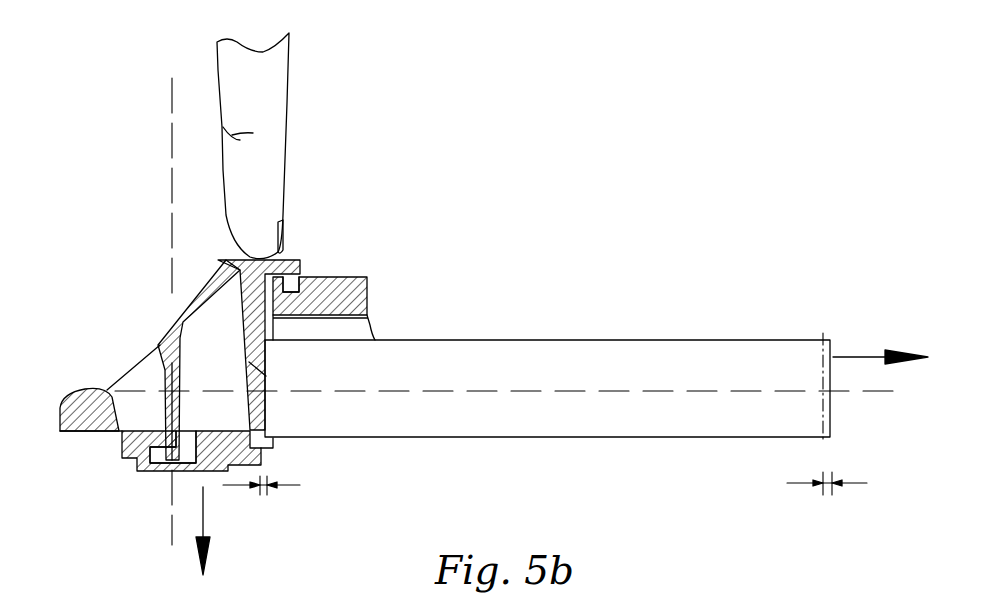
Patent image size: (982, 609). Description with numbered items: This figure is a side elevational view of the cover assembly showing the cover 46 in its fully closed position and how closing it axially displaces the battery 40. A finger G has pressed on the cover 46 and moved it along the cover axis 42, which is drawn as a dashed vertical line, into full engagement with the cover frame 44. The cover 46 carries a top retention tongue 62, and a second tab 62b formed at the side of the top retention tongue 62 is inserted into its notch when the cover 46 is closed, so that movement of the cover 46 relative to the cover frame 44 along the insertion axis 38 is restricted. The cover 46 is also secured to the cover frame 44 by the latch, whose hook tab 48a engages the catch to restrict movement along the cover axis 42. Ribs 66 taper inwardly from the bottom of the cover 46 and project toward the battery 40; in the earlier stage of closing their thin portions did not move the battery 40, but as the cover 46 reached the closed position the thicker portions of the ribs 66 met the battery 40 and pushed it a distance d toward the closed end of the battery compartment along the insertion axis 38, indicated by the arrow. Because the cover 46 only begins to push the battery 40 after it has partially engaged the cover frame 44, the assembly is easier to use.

The cover axis 42 is at (170, 92).
The finger G is at (266, 117).
The top retention tongue 62 is at (290, 260).
The second tab 62b is at (301, 280).
The cover 46 is at (218, 335).
The battery 40 is at (562, 341).
The ribs 66 is at (266, 376).
The insertion axis 38 is at (847, 392).
The hook tab 48a is at (166, 473).
The cover frame 44 is at (213, 473).
The distance d is at (263, 495).